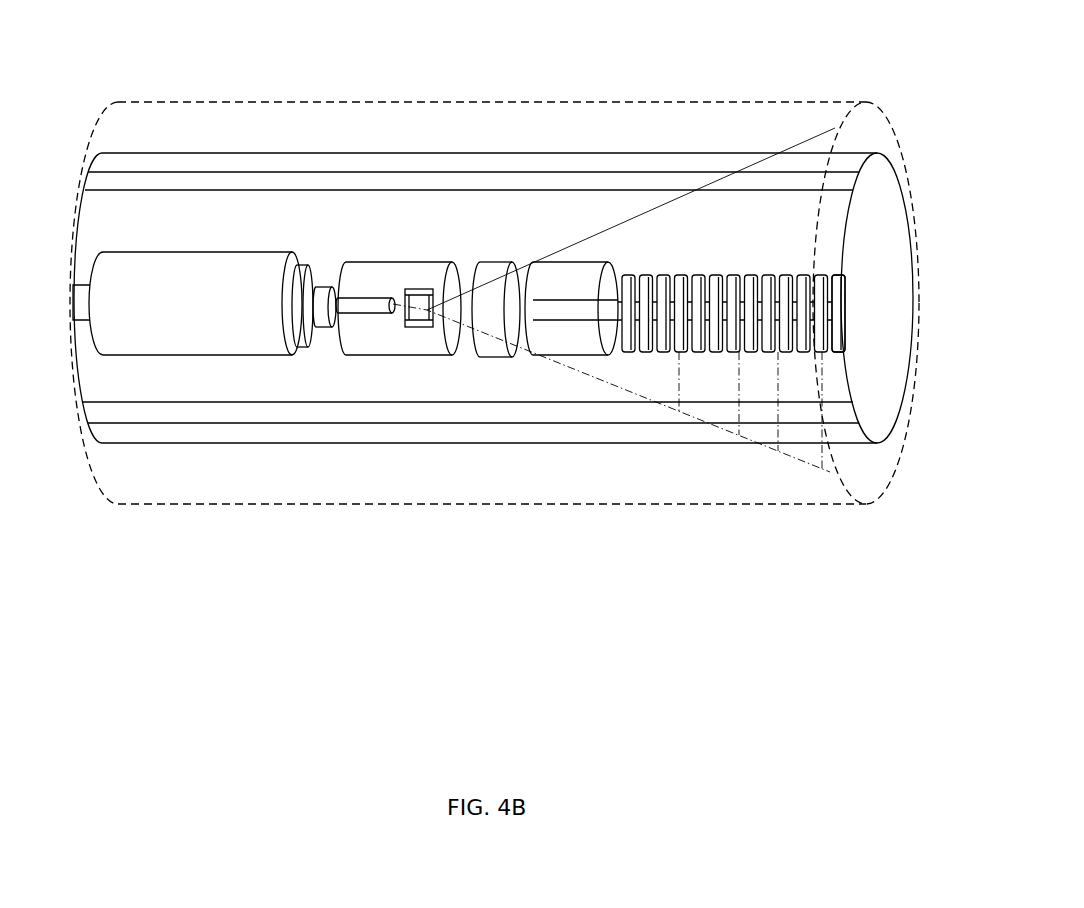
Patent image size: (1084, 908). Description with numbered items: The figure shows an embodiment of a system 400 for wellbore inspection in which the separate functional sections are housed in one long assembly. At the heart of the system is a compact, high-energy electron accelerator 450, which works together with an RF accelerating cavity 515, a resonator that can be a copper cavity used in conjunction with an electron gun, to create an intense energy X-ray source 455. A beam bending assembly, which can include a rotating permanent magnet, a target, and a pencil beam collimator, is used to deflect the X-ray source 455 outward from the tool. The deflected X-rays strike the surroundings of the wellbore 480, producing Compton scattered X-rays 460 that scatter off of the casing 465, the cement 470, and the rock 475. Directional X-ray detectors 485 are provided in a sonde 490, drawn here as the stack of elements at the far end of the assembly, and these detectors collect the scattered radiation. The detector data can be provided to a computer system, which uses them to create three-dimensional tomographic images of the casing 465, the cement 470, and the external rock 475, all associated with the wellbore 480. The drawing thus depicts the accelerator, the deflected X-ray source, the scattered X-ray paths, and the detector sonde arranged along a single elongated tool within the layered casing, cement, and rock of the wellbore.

The system for wellbore inspection 400 is at (164, 80).
The high-energy electron accelerator 450 is at (121, 353).
The X-ray source 455 is at (388, 313).
The Compton scattered X-rays 460 is at (671, 382).
The casing 465 is at (166, 178).
The cement 470 is at (302, 152).
The rock 475 is at (685, 135).
The wellbore 480 is at (531, 96).
The directional X-ray detectors 485 is at (765, 296).
The sonde 490 is at (830, 283).
The RF accelerating cavity 515 is at (437, 243).